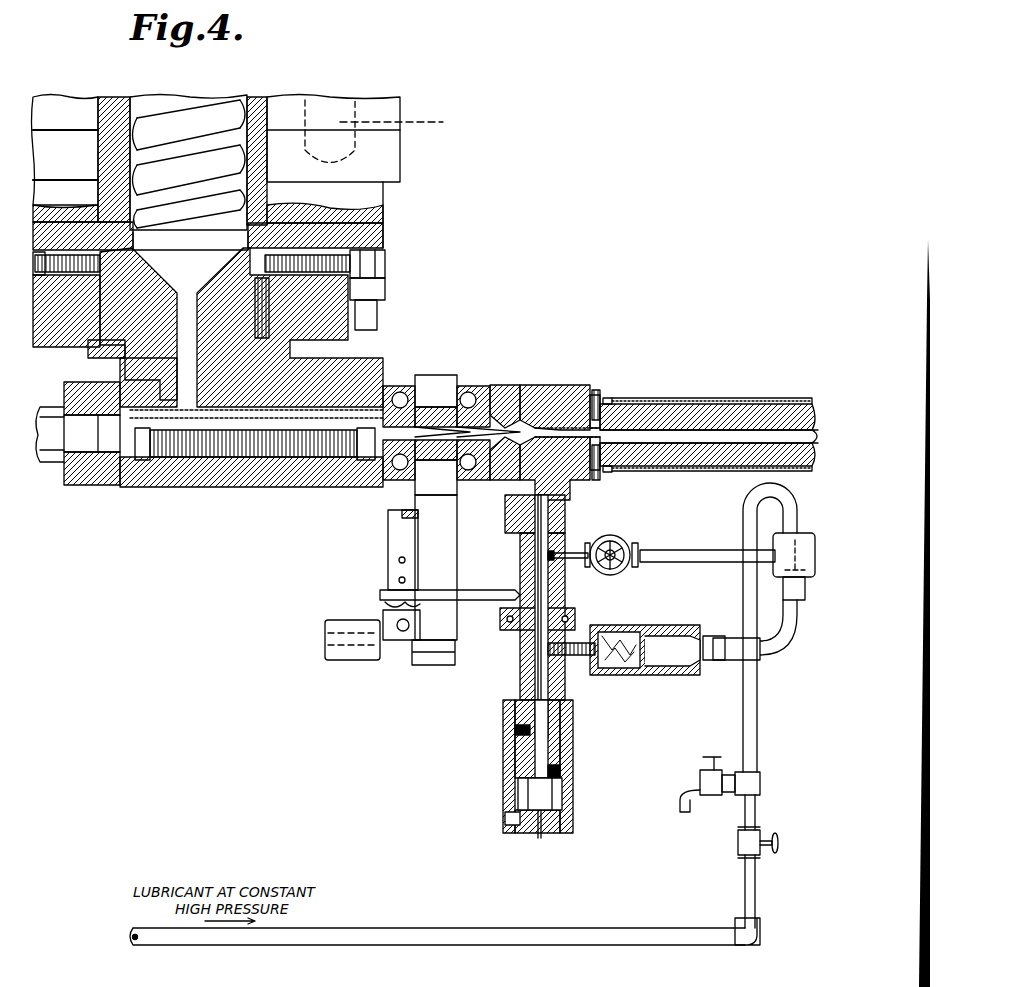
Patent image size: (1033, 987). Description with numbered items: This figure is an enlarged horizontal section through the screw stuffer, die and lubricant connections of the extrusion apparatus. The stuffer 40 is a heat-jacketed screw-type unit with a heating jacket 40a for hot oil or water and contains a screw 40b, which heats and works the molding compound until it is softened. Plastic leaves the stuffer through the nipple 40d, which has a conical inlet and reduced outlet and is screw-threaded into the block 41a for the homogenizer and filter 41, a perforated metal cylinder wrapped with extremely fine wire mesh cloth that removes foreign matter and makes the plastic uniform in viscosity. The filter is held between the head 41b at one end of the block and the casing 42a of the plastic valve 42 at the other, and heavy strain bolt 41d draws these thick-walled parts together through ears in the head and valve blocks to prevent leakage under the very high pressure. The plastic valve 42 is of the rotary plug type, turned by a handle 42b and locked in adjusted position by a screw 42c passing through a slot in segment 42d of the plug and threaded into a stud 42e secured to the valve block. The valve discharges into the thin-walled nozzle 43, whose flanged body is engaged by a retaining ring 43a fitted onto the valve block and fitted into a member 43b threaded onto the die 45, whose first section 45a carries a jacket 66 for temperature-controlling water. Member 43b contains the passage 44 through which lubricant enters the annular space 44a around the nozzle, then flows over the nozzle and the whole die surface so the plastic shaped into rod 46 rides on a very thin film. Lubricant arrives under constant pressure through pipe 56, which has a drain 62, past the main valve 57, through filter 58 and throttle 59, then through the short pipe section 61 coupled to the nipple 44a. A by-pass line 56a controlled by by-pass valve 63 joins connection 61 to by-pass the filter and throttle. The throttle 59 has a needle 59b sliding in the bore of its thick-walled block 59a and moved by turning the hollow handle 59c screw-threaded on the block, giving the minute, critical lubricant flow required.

The stuffer 40 is at (388, 210).
The heating jacket 40a is at (412, 126).
The screw 40b is at (206, 103).
The nipple 40d is at (228, 282).
The homogenizer and filter 41 is at (210, 452).
The block 41a is at (235, 478).
The head 41b is at (97, 487).
The strain bolt 41d is at (50, 455).
The plastic valve 42 is at (395, 487).
The casing of the plastic valve 42a is at (395, 387).
The handle 42b is at (392, 642).
The screw 42c is at (383, 603).
The segment 42d is at (472, 595).
The stud 42e is at (393, 543).
The nozzle 43 is at (545, 445).
The retaining ring 43a is at (500, 385).
The member 43b is at (540, 440).
The passage 44 is at (515, 482).
The annular space / nipple 44a is at (598, 390).
The die 45 is at (612, 405).
The die section 45a is at (635, 422).
The rod 46 is at (720, 437).
The pipe 56 is at (780, 648).
The by-pass line 56a is at (687, 543).
The main valve 57 is at (738, 842).
The filter 58 is at (640, 676).
The throttle 59 is at (489, 712).
The block of throttle 59a is at (513, 688).
The needle 59b is at (518, 728).
The hollow handle 59c is at (503, 790).
The short pipe section 61 is at (555, 545).
The drain 62 is at (700, 780).
The by-pass valve 63 is at (625, 540).
The jacket 66 is at (690, 402).